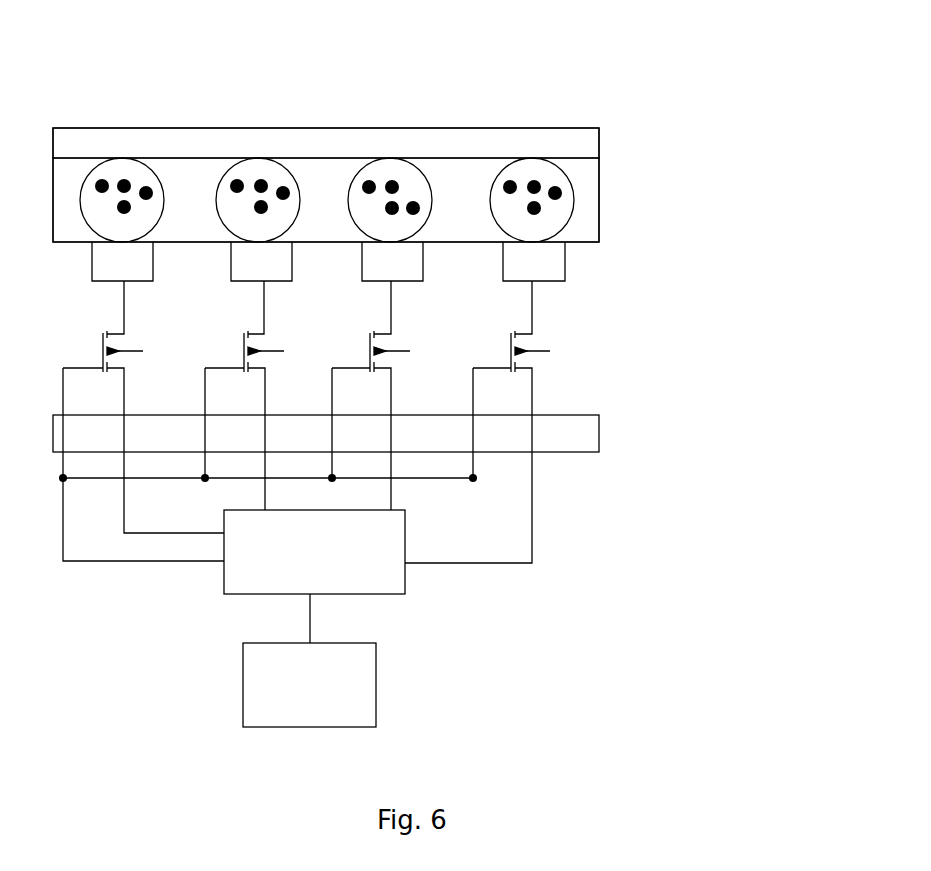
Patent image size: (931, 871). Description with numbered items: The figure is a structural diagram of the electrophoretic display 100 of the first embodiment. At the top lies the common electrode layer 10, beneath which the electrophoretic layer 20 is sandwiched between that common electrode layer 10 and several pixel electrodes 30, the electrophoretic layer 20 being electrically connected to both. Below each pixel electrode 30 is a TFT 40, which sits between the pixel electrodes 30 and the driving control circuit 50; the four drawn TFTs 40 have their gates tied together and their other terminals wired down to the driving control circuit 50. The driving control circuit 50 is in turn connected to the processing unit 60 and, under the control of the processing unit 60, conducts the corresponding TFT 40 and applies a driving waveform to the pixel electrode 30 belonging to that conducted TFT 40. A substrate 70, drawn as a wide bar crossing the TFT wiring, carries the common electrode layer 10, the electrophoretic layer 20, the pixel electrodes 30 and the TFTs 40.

The electrophoretic display 100 is at (390, 51).
The common electrode layer 10 is at (600, 142).
The electrophoretic layer 20 is at (600, 197).
The pixel electrodes 30 is at (567, 274).
The TFT 40 is at (550, 351).
The driving control circuit 50 is at (406, 540).
The processing unit 60 is at (377, 680).
The substrate 70 is at (598, 428).